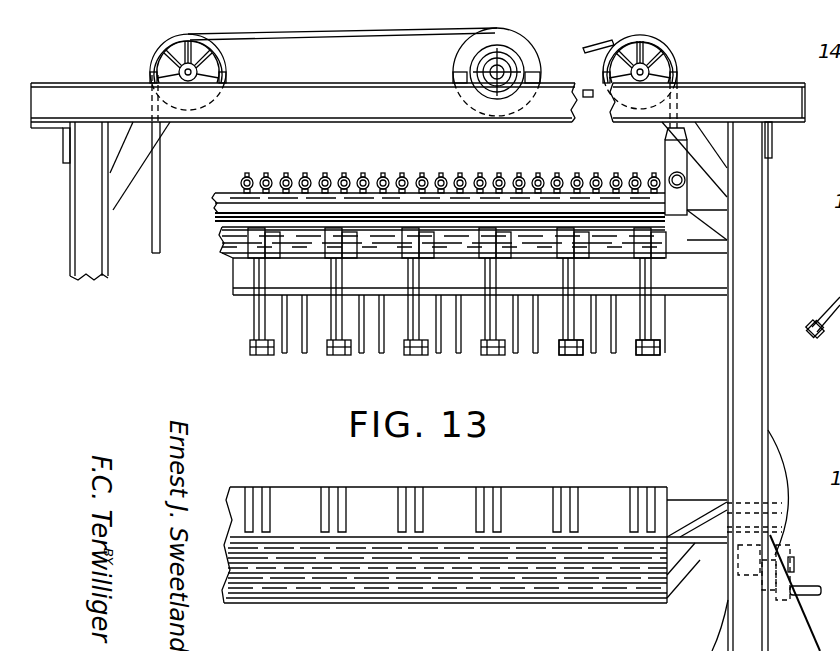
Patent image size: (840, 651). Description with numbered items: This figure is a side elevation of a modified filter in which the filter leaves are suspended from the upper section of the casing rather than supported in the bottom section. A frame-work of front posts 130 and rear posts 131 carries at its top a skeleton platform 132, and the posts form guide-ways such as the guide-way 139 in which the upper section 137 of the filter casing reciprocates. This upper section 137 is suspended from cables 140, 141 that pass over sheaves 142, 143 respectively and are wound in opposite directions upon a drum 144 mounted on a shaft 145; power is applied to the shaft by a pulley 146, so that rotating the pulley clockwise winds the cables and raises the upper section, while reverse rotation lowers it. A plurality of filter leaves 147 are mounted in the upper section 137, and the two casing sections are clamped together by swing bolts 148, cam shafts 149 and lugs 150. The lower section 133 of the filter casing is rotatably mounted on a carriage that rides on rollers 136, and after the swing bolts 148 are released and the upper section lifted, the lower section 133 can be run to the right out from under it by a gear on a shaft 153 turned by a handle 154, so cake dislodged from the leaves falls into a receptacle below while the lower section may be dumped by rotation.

The front posts 130 is at (747, 392).
The rear posts 131 is at (83, 210).
The skeleton platform 132 is at (347, 108).
The lower section of the filter casing 133 is at (372, 503).
The rollers 136 is at (746, 570).
The upper section of the filter casing 137 is at (240, 273).
The guide-way 139 is at (110, 257).
The cable 140 is at (670, 101).
The cable 141 is at (160, 173).
The sheave 142 is at (678, 61).
The sheave 143 is at (227, 67).
The drum 144 is at (462, 57).
The shaft 145 is at (488, 78).
The pulley 146 is at (518, 48).
The filter leaves 147 is at (383, 355).
The swing bolts 148 is at (645, 357).
The cam shafts 149 is at (620, 240).
The lugs 150 is at (478, 512).
The shaft 153 is at (788, 563).
The handle 154 is at (826, 582).